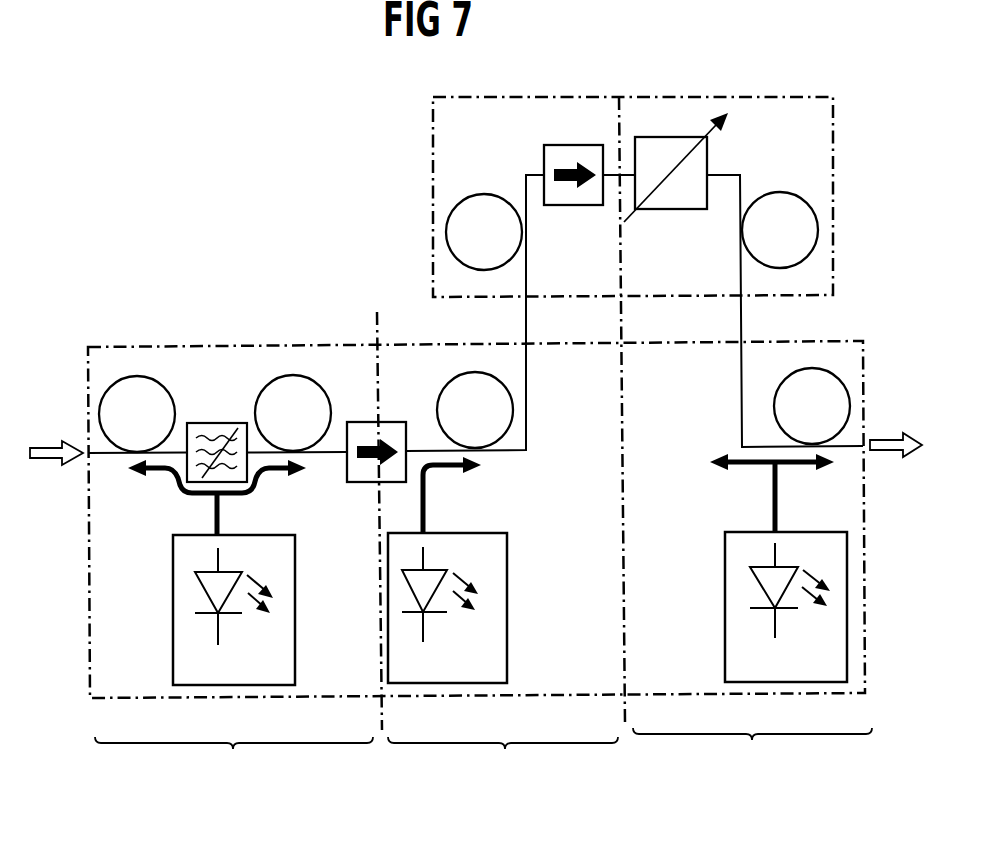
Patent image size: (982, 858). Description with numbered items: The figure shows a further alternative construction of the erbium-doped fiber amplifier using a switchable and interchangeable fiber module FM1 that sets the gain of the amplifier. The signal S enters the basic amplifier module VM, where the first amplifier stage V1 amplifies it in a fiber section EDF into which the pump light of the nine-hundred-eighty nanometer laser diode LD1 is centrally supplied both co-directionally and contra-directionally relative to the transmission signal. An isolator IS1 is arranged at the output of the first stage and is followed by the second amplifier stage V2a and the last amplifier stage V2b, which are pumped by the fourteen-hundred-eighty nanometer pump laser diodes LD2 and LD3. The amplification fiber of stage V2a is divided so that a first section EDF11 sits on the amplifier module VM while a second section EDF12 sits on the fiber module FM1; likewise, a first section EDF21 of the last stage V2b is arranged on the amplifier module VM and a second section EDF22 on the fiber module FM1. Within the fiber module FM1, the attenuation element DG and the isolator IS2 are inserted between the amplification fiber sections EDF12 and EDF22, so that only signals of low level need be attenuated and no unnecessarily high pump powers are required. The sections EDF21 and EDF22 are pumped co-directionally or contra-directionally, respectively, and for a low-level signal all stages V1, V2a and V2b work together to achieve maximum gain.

The signal S is at (56, 437).
The amplifier module VM is at (250, 344).
The fiber module FM1 is at (433, 181).
The fiber section EDF is at (215, 413).
The first section of the amplification fiber of the second amplifier stage EDF11 is at (475, 410).
The second section of the amplification fiber of the second amplifier stage EDF12 is at (484, 232).
The first section of the amplification fiber of the last amplifier stage EDF21 is at (812, 406).
The second section of the amplification fiber of the last amplifier stage EDF22 is at (780, 230).
The isolator IS1 is at (387, 422).
The isolator IS2 is at (572, 206).
The attenuation element DG is at (672, 210).
The 980 nm laser diode LD1 is at (173, 611).
The 1480 nm pump laser diode LD2 is at (507, 607).
The 1480 nm pump laser diode LD3 is at (725, 605).
The first amplifier stage V1 is at (234, 765).
The amplifier stage V2a is at (503, 765).
The amplifier stage V2b is at (752, 758).